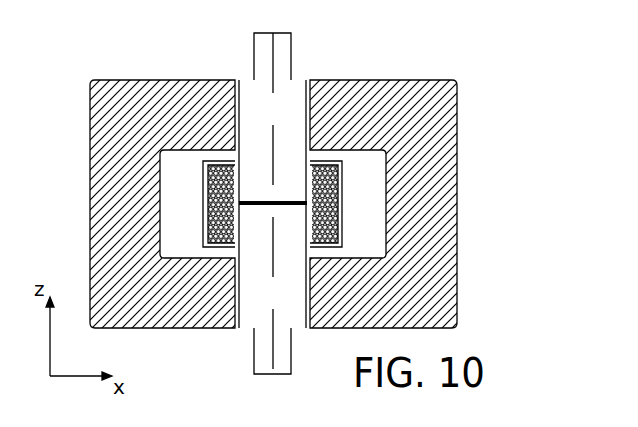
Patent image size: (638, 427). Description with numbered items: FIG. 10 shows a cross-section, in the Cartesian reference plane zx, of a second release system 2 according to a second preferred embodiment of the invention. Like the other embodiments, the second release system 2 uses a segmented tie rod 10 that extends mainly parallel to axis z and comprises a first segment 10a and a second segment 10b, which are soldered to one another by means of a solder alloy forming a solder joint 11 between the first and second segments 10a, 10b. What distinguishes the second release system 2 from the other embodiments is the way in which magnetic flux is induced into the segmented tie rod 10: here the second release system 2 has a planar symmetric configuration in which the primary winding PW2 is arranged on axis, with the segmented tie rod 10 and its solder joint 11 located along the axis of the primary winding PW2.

The second release system 2 is at (406, 60).
The segmented tie rod 10 is at (302, 340).
The first segment 10a is at (265, 317).
The second segment 10b is at (285, 93).
The solder joint 11 is at (251, 201).
The primary winding PW2 is at (208, 183).